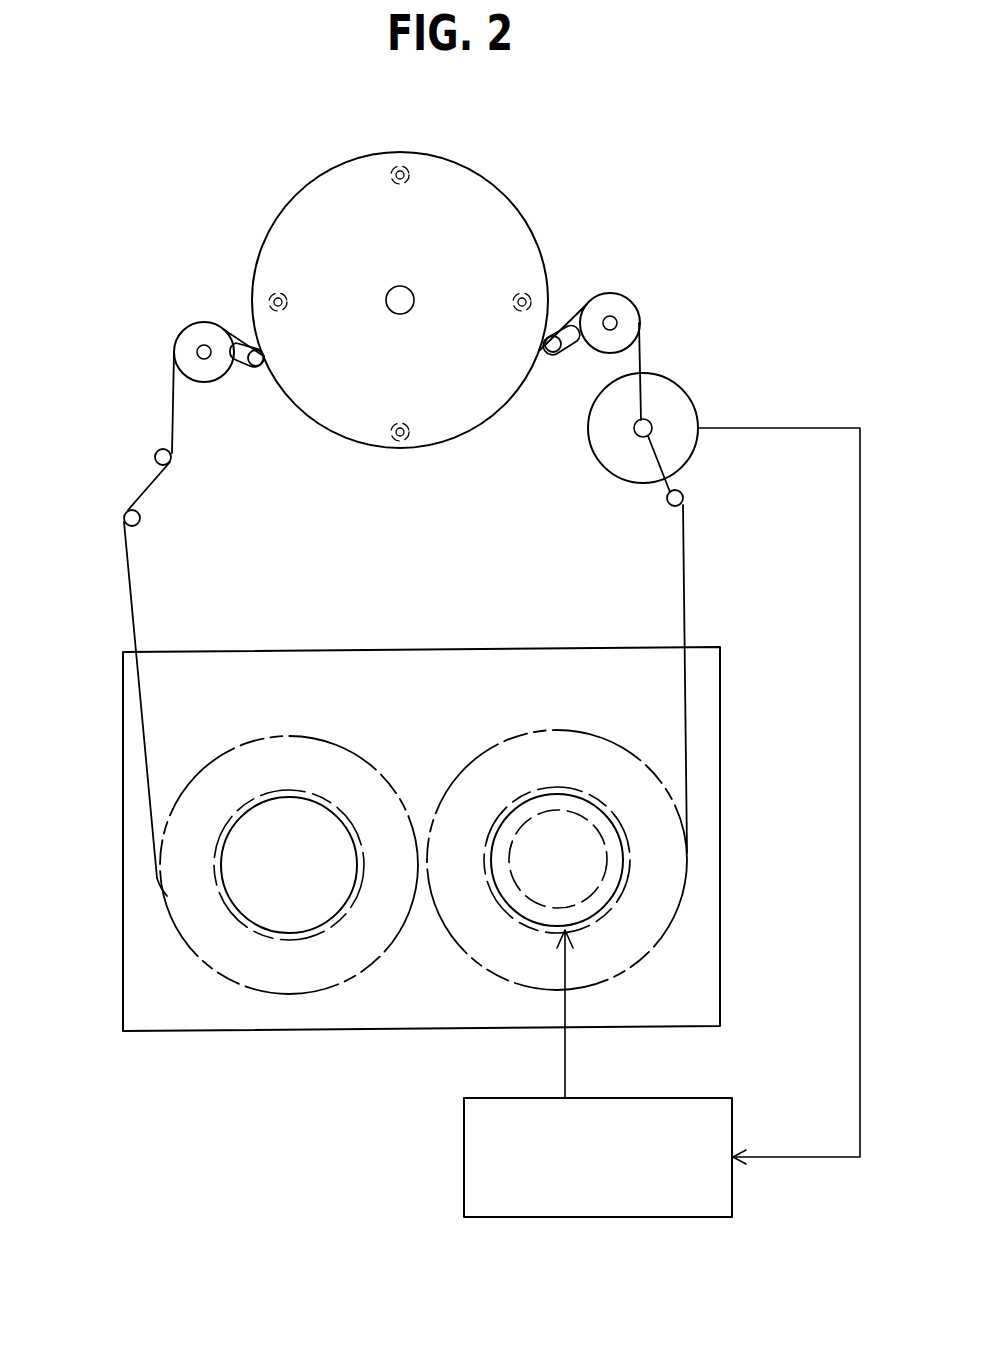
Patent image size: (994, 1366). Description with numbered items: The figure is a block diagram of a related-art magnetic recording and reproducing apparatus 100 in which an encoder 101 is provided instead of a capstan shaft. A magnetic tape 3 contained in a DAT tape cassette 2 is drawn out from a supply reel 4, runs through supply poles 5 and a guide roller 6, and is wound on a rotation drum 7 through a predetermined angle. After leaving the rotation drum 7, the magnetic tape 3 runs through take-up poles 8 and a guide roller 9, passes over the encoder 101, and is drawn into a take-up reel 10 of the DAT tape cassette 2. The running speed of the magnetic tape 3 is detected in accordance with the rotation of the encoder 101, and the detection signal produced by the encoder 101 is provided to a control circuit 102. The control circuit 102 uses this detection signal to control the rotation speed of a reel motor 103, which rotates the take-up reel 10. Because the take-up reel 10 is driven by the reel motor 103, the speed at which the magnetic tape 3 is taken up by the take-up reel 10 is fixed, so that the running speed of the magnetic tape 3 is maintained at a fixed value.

The magnetic recording and reproducing apparatus 100 is at (147, 153).
The rotation drum 7 is at (350, 195).
The guide roller 6 is at (188, 341).
The supply poles 5 is at (128, 508).
The take-up poles 8 is at (548, 356).
The guide roller 9 is at (610, 308).
The encoder 101 is at (678, 418).
The magnetic tape 3 is at (132, 598).
The DAT tape cassette 2 is at (273, 1032).
The supply reel 4 is at (247, 875).
The take-up reel 10 is at (593, 862).
The reel motor 103 is at (593, 893).
The control circuit 102 is at (464, 1174).